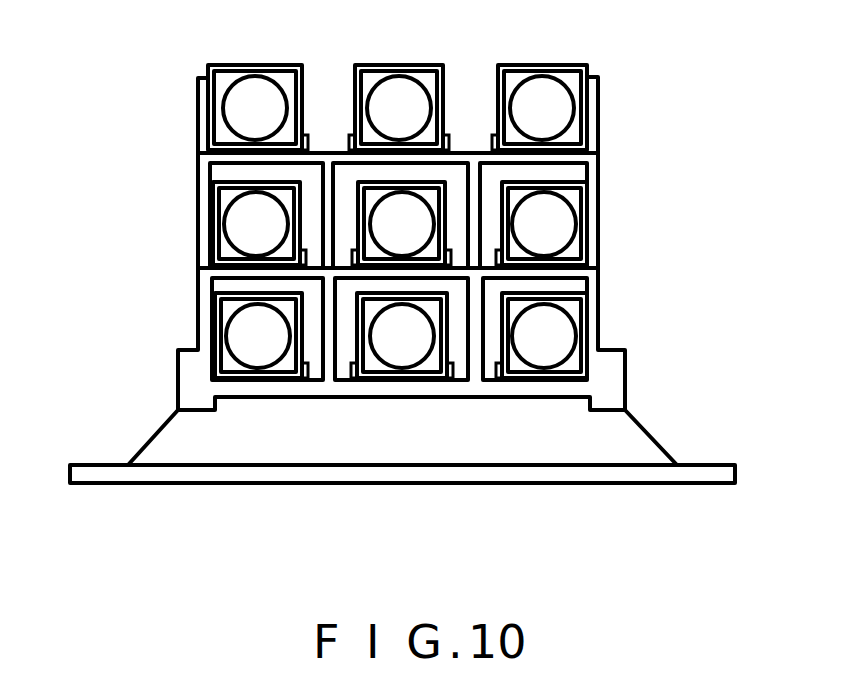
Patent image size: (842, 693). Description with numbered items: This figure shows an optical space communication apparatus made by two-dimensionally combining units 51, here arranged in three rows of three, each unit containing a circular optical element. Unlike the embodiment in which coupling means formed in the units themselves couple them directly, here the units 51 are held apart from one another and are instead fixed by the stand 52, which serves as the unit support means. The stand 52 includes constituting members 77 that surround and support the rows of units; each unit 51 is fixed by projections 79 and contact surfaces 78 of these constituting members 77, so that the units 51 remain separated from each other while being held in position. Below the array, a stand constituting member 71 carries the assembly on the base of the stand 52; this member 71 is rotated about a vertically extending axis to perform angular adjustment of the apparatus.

The unit 51 is at (573, 135).
The stand 52 is at (735, 470).
The stand constituting member 71 is at (643, 447).
The constituting member 77 is at (612, 365).
The contact surface 78 is at (578, 153).
The projection 79 is at (343, 380).